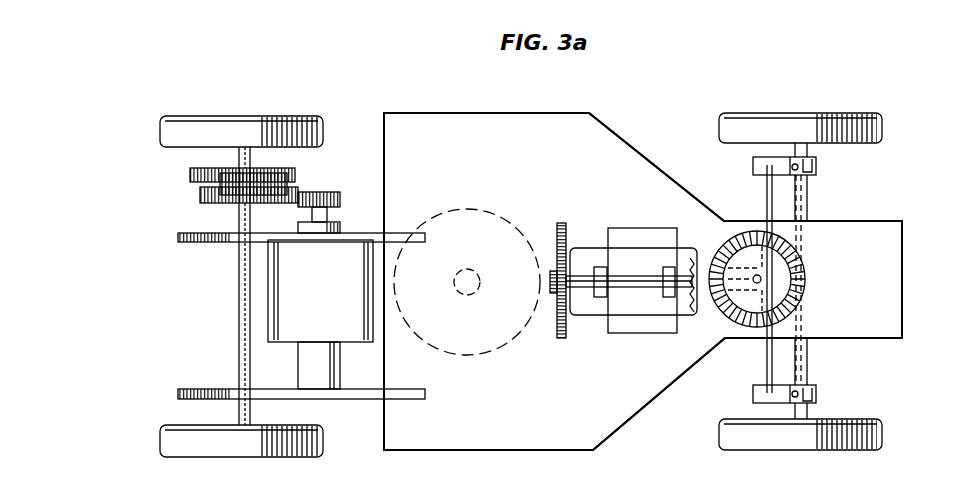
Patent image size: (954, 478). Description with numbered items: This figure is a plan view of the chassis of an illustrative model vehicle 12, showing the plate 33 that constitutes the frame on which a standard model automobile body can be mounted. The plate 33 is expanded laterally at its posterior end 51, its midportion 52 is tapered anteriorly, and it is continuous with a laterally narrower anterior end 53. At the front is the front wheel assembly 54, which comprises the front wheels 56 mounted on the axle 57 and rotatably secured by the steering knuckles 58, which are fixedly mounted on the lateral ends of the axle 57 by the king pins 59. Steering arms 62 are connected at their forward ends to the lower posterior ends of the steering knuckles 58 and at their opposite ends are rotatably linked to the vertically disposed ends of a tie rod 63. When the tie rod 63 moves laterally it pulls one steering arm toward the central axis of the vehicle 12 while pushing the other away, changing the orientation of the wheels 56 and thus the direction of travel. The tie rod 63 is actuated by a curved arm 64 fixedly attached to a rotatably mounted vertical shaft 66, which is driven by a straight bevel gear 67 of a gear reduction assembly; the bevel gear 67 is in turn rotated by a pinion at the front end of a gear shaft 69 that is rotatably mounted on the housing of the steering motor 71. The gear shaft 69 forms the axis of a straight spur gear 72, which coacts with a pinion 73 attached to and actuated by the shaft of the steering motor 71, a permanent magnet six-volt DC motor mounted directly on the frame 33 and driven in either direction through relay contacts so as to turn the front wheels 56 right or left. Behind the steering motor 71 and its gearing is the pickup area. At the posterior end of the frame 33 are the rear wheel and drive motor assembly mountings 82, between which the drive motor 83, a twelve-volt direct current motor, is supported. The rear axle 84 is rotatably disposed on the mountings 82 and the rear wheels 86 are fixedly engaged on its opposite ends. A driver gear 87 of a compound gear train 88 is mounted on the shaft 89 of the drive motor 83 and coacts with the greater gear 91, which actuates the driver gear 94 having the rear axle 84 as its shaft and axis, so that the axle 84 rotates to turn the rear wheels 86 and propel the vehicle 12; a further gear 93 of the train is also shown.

The model vehicle 12 is at (622, 406).
The plate 33 is at (432, 443).
The posterior end 51 is at (421, 125).
The midportion 52 is at (628, 142).
The anterior end 53 is at (892, 248).
The front wheel assembly 54 is at (803, 240).
The front wheels 56 is at (882, 127).
The axle 57 is at (808, 211).
The steering knuckles 58 is at (816, 164).
The king pins 59 is at (793, 171).
The steering arms 62 is at (753, 163).
The tie rod 63 is at (765, 183).
The curved arm 64 is at (722, 310).
The vertical shaft 66 is at (763, 279).
The straight bevel gear 67 is at (743, 232).
The gear shaft 69 is at (636, 278).
The steering motor 71 is at (622, 335).
The straight spur gear 72 is at (560, 223).
The pinion 73 is at (553, 294).
The rear wheel and drive motor assembly mountings 82 is at (196, 243).
The drive motor 83 is at (283, 290).
The rear axle 84 is at (238, 153).
The rear wheels 86 is at (166, 131).
The driver gear 87 is at (334, 192).
The compound gear train 88 is at (195, 188).
The shaft 89 is at (322, 214).
The greater gear 91 is at (206, 198).
The gear 93 is at (290, 186).
The driver gear 94 is at (190, 176).